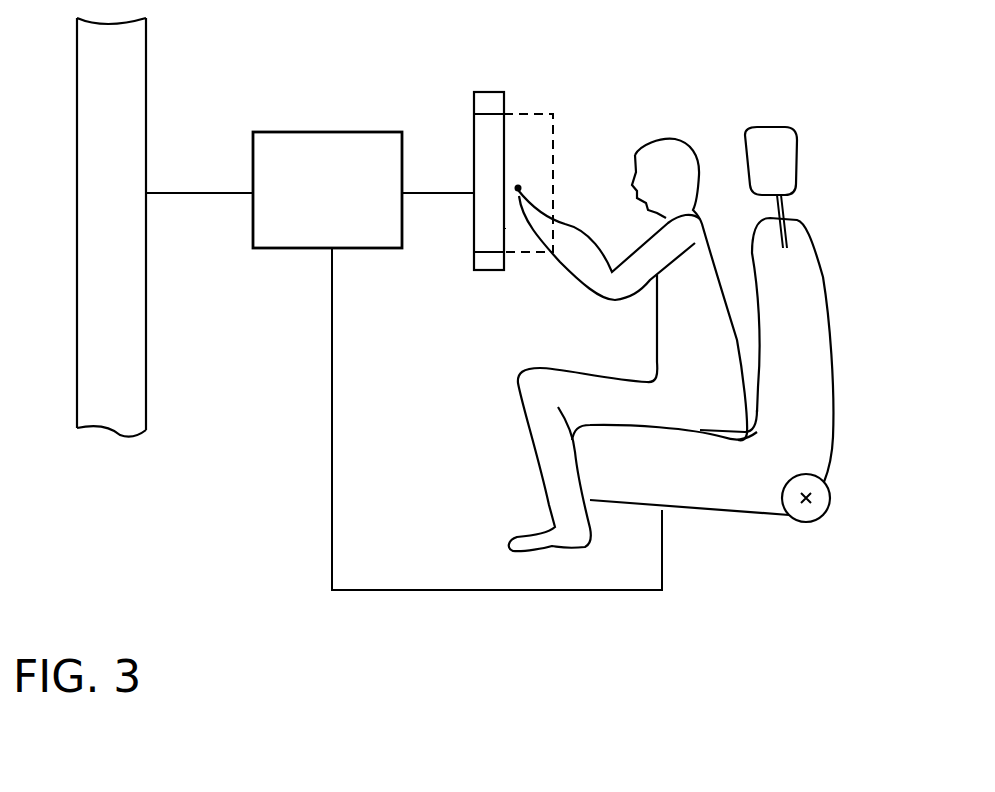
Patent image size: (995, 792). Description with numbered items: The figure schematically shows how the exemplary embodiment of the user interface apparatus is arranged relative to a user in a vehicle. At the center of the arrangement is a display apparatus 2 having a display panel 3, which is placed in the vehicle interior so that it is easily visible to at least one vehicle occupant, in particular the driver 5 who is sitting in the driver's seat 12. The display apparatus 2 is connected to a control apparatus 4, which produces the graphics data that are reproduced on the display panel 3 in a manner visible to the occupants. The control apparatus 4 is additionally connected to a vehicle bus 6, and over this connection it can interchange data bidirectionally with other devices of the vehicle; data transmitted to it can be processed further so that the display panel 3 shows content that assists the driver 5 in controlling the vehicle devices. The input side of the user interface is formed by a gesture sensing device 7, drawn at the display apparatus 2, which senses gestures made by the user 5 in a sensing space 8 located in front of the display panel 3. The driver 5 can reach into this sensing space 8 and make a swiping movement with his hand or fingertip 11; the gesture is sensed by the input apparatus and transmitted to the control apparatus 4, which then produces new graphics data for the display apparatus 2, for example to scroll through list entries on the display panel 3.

The display apparatus 2 is at (491, 136).
The display panel 3 is at (505, 228).
The control apparatus 4 is at (341, 207).
The driver 5 is at (703, 336).
The vehicle bus 6 is at (111, 227).
The gesture sensing device 7 is at (487, 102).
The sensing space 8 is at (535, 135).
The fingertip 11 is at (519, 187).
The driver's seat 12 is at (802, 392).